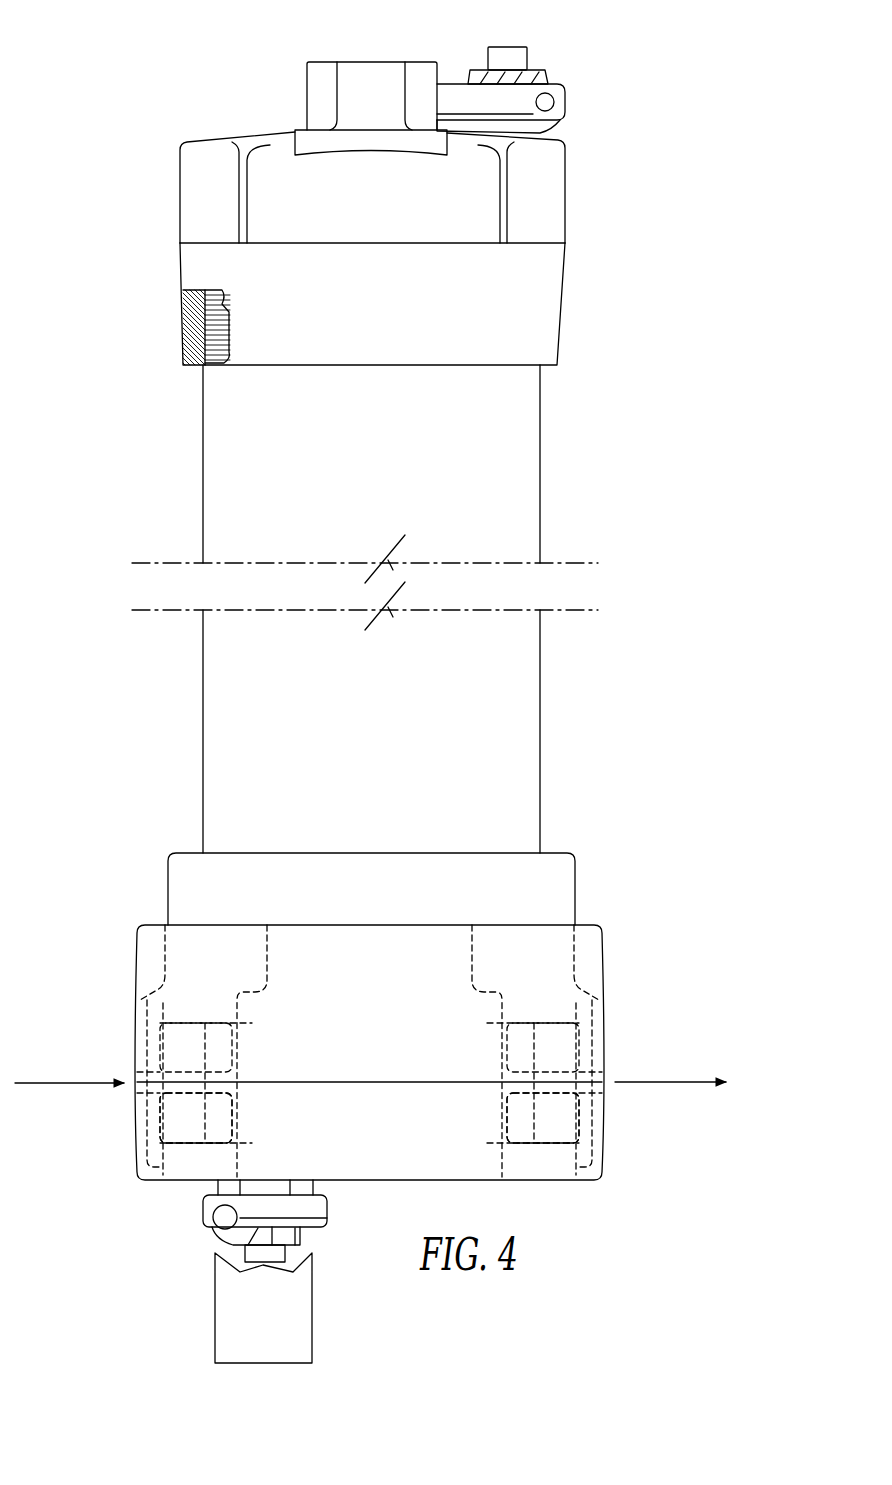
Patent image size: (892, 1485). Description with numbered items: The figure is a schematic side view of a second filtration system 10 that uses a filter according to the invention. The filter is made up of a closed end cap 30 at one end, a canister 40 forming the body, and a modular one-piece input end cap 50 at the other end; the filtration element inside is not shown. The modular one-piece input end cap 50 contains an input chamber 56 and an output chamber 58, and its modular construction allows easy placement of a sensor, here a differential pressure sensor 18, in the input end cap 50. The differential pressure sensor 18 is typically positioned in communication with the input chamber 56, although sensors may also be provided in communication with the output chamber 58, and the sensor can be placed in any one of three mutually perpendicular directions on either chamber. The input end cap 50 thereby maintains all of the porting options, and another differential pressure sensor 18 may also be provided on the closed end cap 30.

The system 10 is at (586, 82).
The closed end cap 30 is at (548, 263).
The canister 40 is at (522, 693).
The modular one-piece input end cap 50 is at (565, 958).
The input chamber 56 is at (147, 1127).
The output chamber 58 is at (588, 1120).
The differential pressure sensor 18 is at (203, 1228).